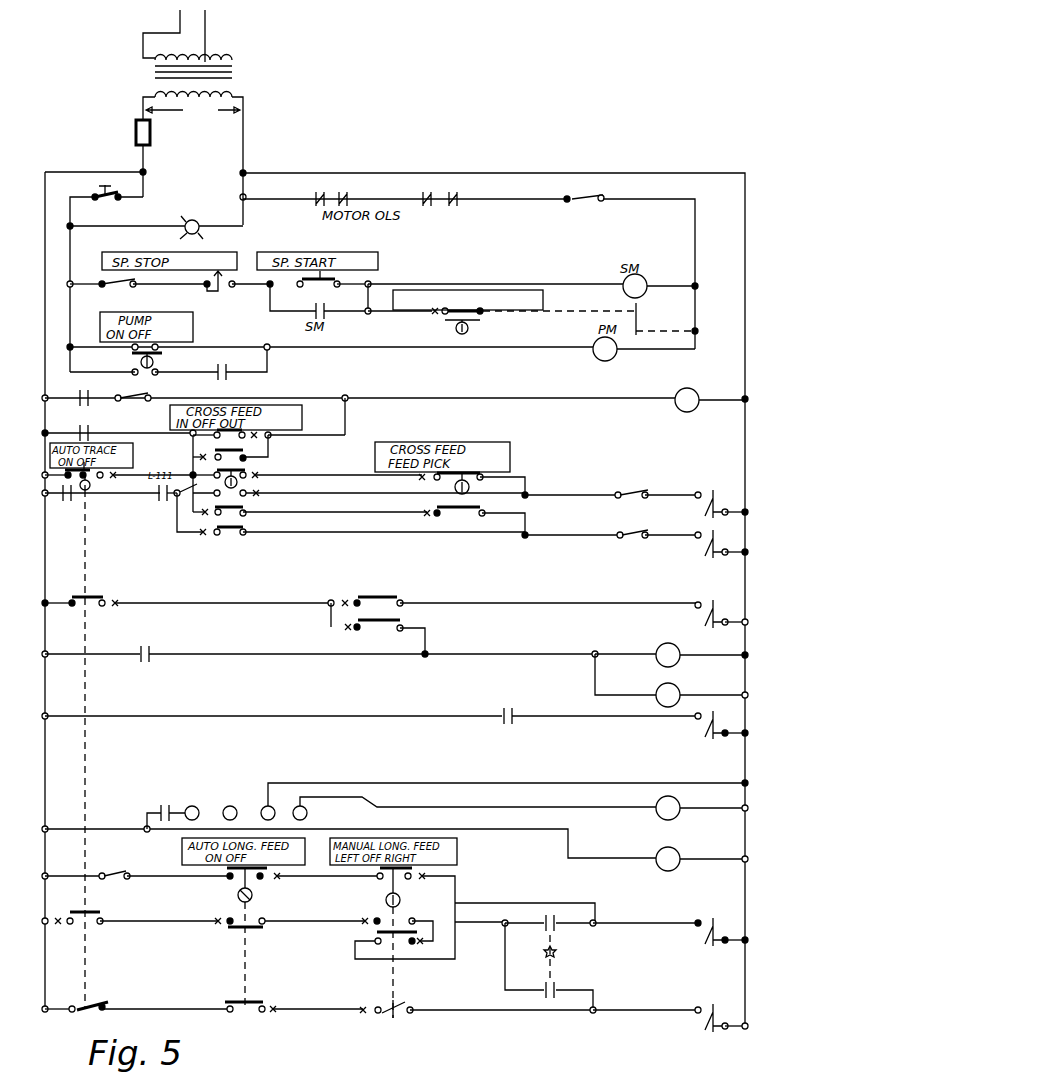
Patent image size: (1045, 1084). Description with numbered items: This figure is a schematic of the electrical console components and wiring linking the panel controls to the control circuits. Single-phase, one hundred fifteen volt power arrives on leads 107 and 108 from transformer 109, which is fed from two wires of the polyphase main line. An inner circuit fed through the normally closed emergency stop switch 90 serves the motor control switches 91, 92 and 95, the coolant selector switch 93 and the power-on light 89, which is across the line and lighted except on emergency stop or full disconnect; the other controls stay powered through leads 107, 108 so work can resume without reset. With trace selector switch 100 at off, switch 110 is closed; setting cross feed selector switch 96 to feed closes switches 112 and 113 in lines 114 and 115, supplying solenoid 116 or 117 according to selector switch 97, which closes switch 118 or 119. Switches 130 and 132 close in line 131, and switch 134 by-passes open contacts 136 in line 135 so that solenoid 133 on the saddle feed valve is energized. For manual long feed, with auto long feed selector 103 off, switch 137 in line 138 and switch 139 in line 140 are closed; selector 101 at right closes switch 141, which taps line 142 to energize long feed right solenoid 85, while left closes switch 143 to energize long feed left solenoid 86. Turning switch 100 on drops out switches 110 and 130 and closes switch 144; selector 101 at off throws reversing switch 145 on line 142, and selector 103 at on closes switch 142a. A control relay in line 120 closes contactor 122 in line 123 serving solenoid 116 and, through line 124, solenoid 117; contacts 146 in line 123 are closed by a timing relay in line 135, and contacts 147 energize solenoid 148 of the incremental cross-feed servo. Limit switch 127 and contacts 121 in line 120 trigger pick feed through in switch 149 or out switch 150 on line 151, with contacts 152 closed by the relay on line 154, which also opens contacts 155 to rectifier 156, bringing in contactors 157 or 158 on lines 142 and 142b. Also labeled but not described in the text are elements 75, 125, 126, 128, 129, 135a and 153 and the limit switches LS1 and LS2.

The power supply leads 75 is at (193, 23).
The transformer 109 is at (233, 72).
The single phase lead 108 is at (243, 143).
The single phase lead 107 is at (143, 154).
The emergency stop switch 90 is at (112, 200).
The power on light 89 is at (198, 221).
The motor control switch 92 is at (220, 290).
The motor control switch 91 is at (322, 287).
The coolant selector switch 93 is at (468, 330).
The line 120 is at (525, 398).
The contacts 121 is at (96, 395).
The limit switch 127 is at (155, 386).
The contacts 152 is at (90, 432).
The line 151 is at (176, 432).
The out switch 150 is at (192, 452).
The in switch 149 is at (253, 453).
The selector switch 97 is at (195, 468).
The switch 118 is at (240, 467).
The line 125 is at (253, 483).
The switch 119 is at (243, 502).
The switch 126 is at (253, 523).
The contacts 146 is at (177, 520).
The switch 110 is at (97, 478).
The trace selector switch 100 is at (87, 495).
The contactor 122 is at (62, 500).
The line 123 is at (152, 505).
The line 114 is at (363, 475).
The cross feed selector switch 96 is at (455, 487).
The switch 112 is at (480, 480).
The line 115 is at (420, 512).
The switch 113 is at (465, 503).
The line 124 is at (597, 532).
The limit switch 128 is at (628, 483).
The cross-feed out solenoid 116 is at (716, 473).
The limit switch 129 is at (628, 527).
The solenoid 117 is at (718, 526).
The switch 130 is at (92, 595).
The line 131 is at (172, 603).
The switch 132 is at (378, 597).
The switch 134 is at (385, 622).
The contacts 136 is at (152, 652).
The line 135 is at (245, 653).
The line 135a is at (615, 693).
The line 153 is at (220, 715).
The contacts 147 is at (510, 703).
The solenoid 148 is at (707, 710).
The solenoid 133 is at (708, 600).
The line 154 is at (90, 828).
The contacts 155 is at (165, 805).
The rectifier 156 is at (250, 810).
The limit switch LS1 is at (108, 872).
The switch 137 is at (240, 878).
The auto long feed selector switch 103 is at (255, 897).
The line 138 is at (318, 878).
The switch 141 is at (408, 883).
The manual long feed selector switch 101 is at (402, 902).
The switch 144 is at (90, 925).
The line 142 is at (172, 920).
The switch 142a is at (230, 933).
The reversing switch 145 is at (365, 932).
The contactor 157 is at (543, 927).
The contactor 158 is at (550, 993).
The line 142b is at (532, 995).
The long feed right solenoid 85 is at (717, 913).
The limit switch LS2 is at (100, 1007).
The switch 139 is at (253, 995).
The line 140 is at (307, 1008).
The switch 143 is at (400, 1007).
The long feed left solenoid 86 is at (725, 987).
The motor control switch 95 is at (133, 357).